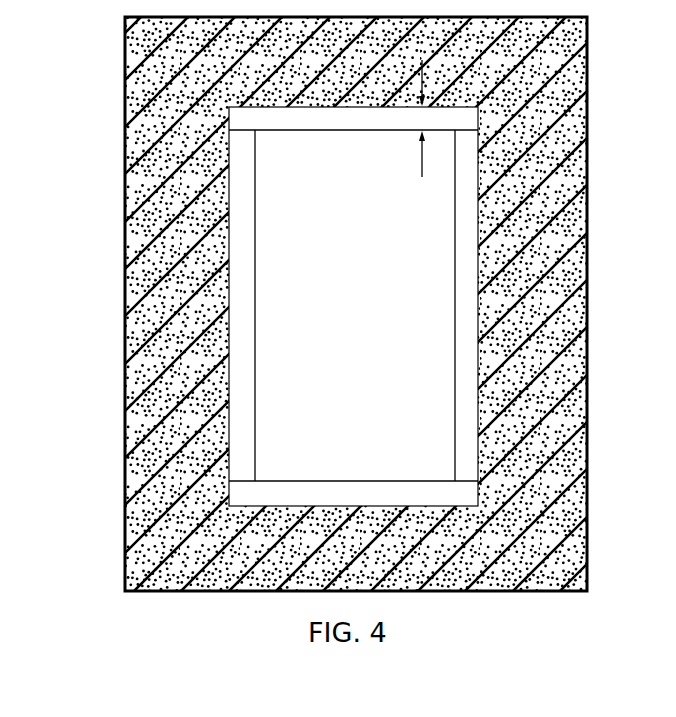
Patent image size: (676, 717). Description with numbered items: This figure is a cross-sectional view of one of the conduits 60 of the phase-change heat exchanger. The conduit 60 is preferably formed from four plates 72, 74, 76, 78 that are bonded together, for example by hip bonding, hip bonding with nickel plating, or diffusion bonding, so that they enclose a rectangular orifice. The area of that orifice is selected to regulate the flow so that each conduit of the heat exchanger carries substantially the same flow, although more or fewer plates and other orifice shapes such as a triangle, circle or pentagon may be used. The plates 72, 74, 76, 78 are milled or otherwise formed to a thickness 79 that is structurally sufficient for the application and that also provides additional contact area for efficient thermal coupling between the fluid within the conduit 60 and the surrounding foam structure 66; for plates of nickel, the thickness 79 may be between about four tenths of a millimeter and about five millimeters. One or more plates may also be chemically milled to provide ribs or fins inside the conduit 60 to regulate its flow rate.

The mold body 66 is at (125, 330).
The conduit 60 is at (328, 264).
The plate 74 is at (302, 125).
The plate 72 is at (245, 383).
The plate 76 is at (458, 291).
The plate 78 is at (387, 488).
The thickness 79 is at (422, 177).